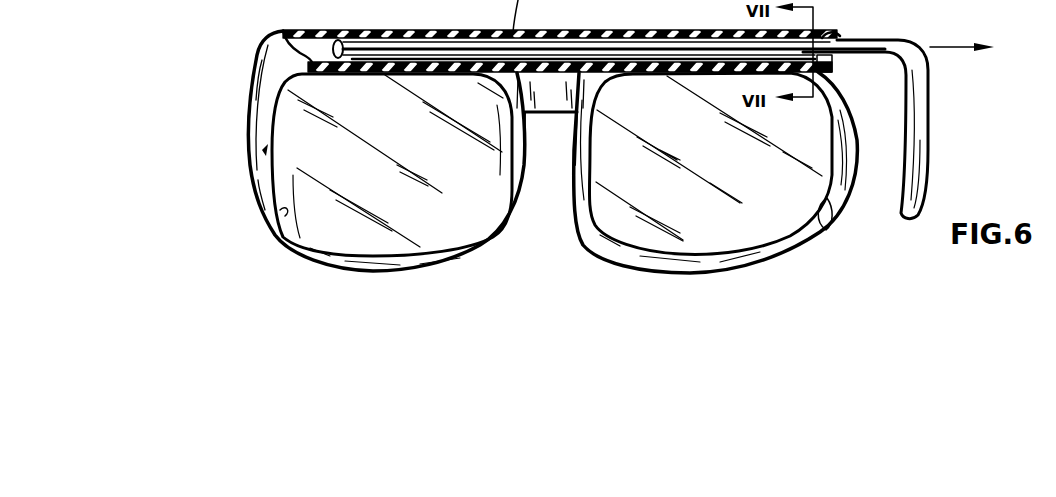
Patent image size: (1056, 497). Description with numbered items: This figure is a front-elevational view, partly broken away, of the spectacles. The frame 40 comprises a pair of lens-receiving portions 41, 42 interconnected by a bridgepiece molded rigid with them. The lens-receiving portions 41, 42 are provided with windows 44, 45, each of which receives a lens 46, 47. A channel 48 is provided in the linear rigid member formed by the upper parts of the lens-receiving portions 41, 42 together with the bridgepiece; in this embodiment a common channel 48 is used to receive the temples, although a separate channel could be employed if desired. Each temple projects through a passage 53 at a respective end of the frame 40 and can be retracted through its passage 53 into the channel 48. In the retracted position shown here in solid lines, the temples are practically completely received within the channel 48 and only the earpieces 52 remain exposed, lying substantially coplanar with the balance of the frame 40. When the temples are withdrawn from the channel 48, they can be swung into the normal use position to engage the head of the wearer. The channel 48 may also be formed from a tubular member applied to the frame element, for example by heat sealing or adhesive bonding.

The frame 40 is at (262, 152).
The lens-receiving portion 41 is at (490, 235).
The lens-receiving portion 42 is at (643, 253).
The window 44 is at (283, 213).
The window 45 is at (824, 228).
The lens 46 is at (368, 247).
The lens 47 is at (770, 233).
The channel 48 is at (369, 60).
The earpiece 52 is at (929, 125).
The passage 53 is at (837, 37).